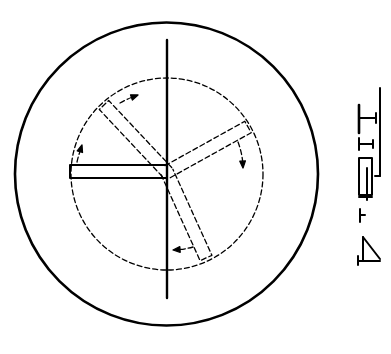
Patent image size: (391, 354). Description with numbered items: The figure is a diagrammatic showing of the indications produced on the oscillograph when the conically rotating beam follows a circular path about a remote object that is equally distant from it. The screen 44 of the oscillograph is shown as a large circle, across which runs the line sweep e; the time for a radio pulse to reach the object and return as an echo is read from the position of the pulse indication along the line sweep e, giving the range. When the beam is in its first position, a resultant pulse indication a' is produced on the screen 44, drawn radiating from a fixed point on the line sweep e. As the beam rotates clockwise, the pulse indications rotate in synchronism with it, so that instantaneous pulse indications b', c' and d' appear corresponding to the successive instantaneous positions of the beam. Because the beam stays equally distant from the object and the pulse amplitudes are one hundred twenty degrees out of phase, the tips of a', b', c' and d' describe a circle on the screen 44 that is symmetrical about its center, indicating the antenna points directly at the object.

The screen 44 is at (252, 43).
The line sweep e is at (167, 52).
The resultant pulse indication a' is at (118, 184).
The instantaneous pulse indication b' is at (129, 139).
The instantaneous pulse indication c' is at (207, 144).
The instantaneous pulse indication d' is at (191, 214).